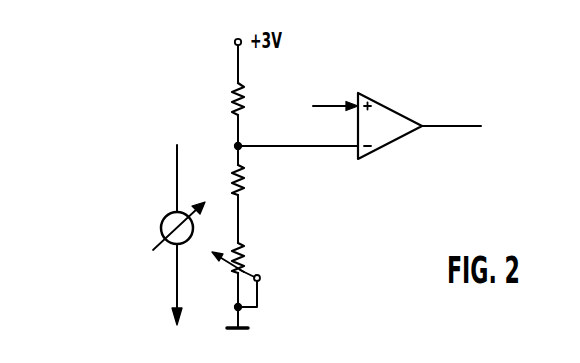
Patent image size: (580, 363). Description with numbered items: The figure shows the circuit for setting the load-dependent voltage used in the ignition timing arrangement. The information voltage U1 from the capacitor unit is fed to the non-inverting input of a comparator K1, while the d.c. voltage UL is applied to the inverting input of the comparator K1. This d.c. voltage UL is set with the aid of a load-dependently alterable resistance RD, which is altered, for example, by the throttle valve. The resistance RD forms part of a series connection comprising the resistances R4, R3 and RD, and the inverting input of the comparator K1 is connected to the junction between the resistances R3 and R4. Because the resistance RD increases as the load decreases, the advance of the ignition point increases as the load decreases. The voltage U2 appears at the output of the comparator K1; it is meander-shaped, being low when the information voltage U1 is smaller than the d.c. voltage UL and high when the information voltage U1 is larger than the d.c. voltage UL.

The resistance R4 is at (223, 101).
The resistance R3 is at (252, 182).
The load-dependently alterable resistance RD is at (244, 273).
The comparator K1 is at (398, 117).
The information voltage U1 is at (332, 95).
The voltage U2 is at (471, 121).
The d.c. voltage UL is at (124, 235).